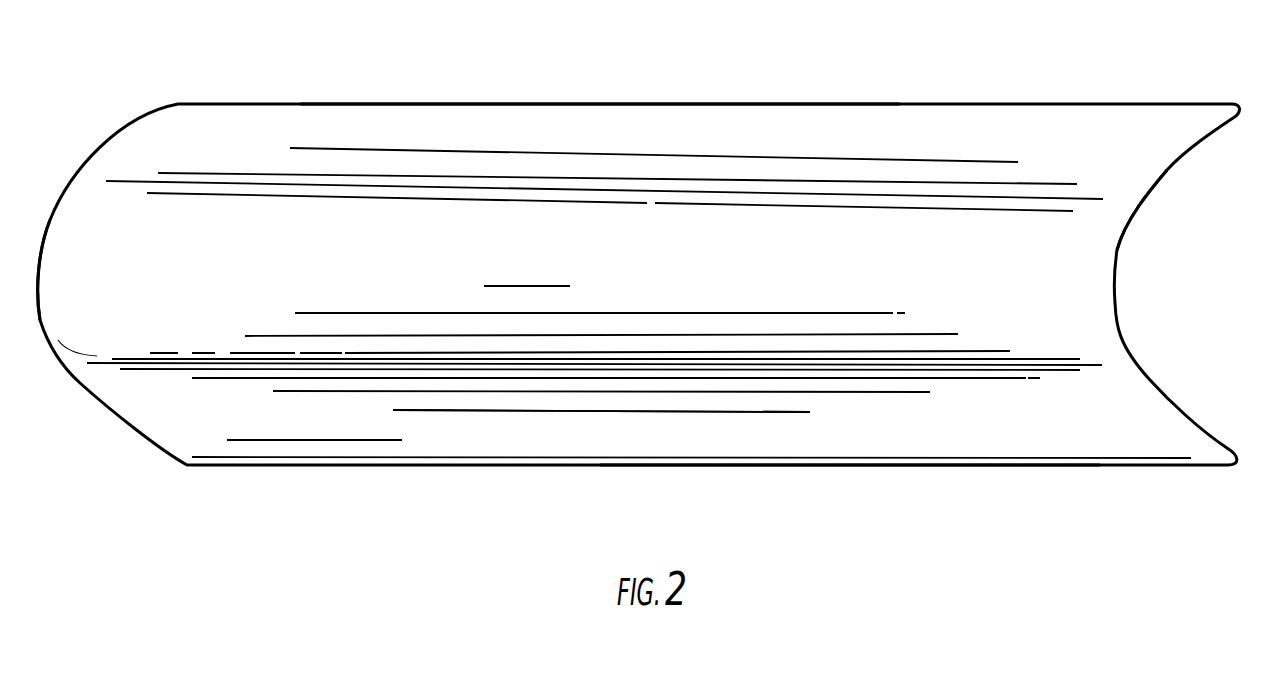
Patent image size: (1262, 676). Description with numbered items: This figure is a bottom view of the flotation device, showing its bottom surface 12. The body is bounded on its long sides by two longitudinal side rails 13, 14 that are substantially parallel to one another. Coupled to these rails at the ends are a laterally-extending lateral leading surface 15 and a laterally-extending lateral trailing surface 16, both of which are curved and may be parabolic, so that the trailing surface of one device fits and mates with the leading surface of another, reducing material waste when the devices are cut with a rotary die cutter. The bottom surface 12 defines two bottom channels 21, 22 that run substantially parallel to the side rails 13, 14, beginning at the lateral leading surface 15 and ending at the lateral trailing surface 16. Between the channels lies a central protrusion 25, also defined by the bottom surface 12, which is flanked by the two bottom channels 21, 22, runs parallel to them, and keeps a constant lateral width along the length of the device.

The bottom surface 12 is at (233, 162).
The longitudinal side rail 13 is at (600, 103).
The longitudinal side rail 14 is at (953, 466).
The lateral leading surface 15 is at (80, 385).
The lateral trailing surface 16 is at (1171, 170).
The bottom channel 21 is at (387, 167).
The bottom channel 22 is at (721, 405).
The central protrusion 25 is at (428, 272).